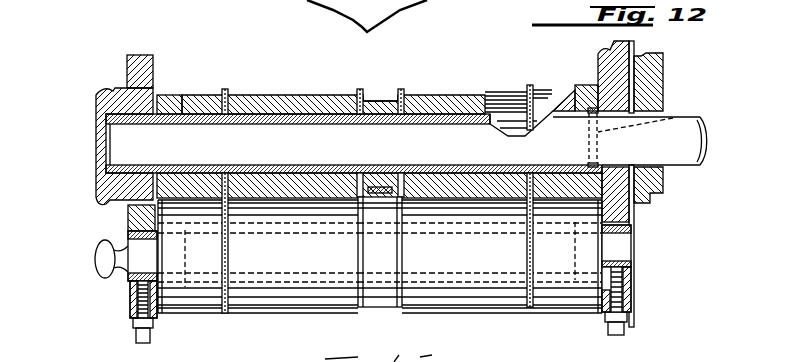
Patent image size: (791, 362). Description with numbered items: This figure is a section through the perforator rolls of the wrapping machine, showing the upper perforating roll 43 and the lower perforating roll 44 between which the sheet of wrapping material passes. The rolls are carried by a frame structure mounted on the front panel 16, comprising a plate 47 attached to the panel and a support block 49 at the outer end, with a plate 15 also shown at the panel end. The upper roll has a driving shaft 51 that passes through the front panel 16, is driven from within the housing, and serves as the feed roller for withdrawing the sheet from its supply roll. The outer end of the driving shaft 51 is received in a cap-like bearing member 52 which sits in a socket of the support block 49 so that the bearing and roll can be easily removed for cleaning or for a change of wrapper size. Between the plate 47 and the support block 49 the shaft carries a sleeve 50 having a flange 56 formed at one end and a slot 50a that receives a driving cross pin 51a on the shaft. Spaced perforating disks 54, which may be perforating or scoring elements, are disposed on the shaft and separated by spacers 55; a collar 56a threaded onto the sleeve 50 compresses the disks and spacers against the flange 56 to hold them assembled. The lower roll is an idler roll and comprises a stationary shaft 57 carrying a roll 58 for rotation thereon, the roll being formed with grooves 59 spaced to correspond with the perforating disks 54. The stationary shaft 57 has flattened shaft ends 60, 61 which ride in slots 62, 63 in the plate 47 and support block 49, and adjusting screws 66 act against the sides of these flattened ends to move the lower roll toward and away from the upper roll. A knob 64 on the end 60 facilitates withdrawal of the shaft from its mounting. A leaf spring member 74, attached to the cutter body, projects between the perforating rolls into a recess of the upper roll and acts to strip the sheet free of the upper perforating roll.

The plate 15 is at (664, 78).
The front panel 16 is at (635, 46).
The perforating roll 43 is at (441, 77).
The perforating roll 44 is at (220, 313).
The plate 47 is at (616, 52).
The support block 49 is at (127, 68).
The sleeve 50 is at (338, 94).
The slot 50a is at (650, 96).
The driving shaft 51 is at (112, 148).
The driving cross pin 51a is at (640, 116).
The cap-like bearing member 52 is at (108, 194).
The perforating disks 54 is at (226, 92).
The spacers 55 is at (283, 95).
The flange 56 is at (592, 85).
The collar 56a is at (172, 95).
The stationary shaft 57 is at (495, 268).
The roll 58 is at (302, 297).
The grooves 59 is at (228, 313).
The flattened shaft end 60 is at (138, 265).
The flattened shaft end 61 is at (622, 254).
The slot 62 is at (130, 300).
The slot 63 is at (625, 292).
The knob 64 is at (98, 262).
The adjusting screws 66 is at (143, 343).
The leaf spring member 74 is at (378, 200).